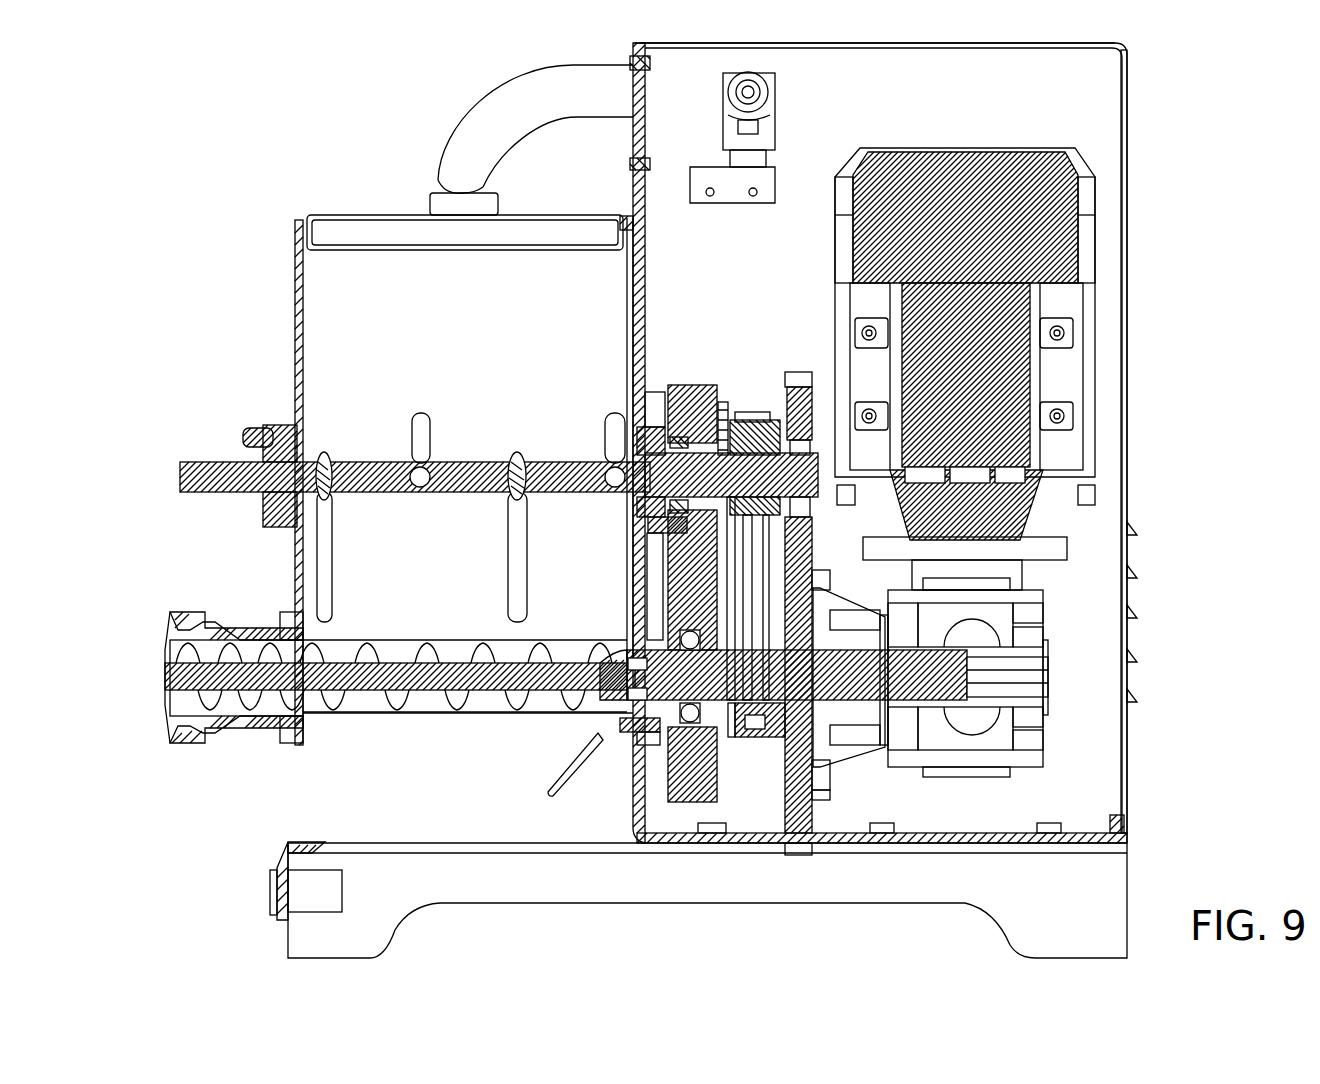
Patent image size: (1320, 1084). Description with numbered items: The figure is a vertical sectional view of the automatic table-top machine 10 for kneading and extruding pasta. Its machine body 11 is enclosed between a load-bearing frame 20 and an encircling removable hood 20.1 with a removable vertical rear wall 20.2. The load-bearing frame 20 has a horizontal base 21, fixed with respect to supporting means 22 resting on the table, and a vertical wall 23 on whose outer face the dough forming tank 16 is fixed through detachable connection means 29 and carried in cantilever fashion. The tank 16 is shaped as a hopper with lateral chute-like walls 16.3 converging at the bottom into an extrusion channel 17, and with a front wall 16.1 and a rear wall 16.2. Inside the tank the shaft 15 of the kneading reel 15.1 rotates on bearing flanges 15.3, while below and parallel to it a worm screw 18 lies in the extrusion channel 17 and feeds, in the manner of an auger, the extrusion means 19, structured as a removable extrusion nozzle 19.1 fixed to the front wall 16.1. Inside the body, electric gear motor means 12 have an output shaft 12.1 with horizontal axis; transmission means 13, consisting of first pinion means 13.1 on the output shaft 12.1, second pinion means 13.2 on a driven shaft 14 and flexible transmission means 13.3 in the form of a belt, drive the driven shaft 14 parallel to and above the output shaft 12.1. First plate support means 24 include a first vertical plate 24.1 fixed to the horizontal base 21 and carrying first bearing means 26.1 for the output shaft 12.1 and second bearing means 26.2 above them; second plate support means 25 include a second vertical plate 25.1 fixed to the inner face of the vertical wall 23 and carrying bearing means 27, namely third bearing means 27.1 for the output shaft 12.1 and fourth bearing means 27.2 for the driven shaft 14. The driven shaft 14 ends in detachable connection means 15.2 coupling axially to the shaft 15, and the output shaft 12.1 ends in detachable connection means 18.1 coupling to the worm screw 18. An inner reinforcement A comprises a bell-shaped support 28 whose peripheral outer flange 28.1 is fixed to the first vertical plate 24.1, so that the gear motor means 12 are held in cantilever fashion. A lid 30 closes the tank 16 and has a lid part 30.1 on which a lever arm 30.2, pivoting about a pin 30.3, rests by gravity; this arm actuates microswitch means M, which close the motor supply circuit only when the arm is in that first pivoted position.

The automatic table-top machine 10 is at (183, 183).
The machine body 11 is at (1196, 165).
The electric gear motor means 12 is at (1068, 650).
The output shaft 12.1 is at (880, 700).
The transmission means 13 is at (750, 400).
The first pinion means 13.1 is at (737, 700).
The second pinion means 13.2 is at (746, 428).
The flexible transmission means 13.3 is at (760, 400).
The driven shaft 14 is at (782, 470).
The shaft of the kneading reel 15 is at (488, 465).
The kneading reel 15.1 is at (590, 440).
The detachable connection means 15.2 is at (605, 452).
The shaft bearing flange 15.3 is at (282, 540).
The dough forming tank 16 is at (275, 330).
The front wall 16.1 is at (290, 265).
The rear wall 16.2 is at (622, 215).
The lateral chute-like walls 16.3 is at (465, 355).
The extrusion channel 17 is at (432, 702).
The worm screw 18 is at (495, 692).
The detachable connection means 18.1 is at (612, 660).
The extrusion means 19 is at (252, 615).
The removable extrusion nozzle 19.1 is at (252, 735).
The load-bearing frame 20 is at (612, 806).
The removable hood 20.1 is at (1020, 45).
The removable vertical rear wall 20.2 is at (1130, 248).
The horizontal base 21 is at (975, 833).
The supporting means 22 is at (288, 842).
The vertical wall 23 is at (648, 250).
The first plate support means 24 is at (790, 800).
The first vertical plate 24.1 is at (810, 565).
The second plate support means 25 is at (692, 795).
The second vertical plate 25.1 is at (700, 392).
The first bearing means 26.1 is at (762, 737).
The second bearing means 26.2 is at (800, 372).
The bearing means 27 is at (658, 540).
The third bearing means 27.1 is at (634, 742).
The fourth bearing means 27.2 is at (678, 385).
The bell-shaped support 28 is at (842, 582).
The peripheral outer flange 28.1 is at (832, 790).
The detachable connection means 29 is at (596, 730).
The lid 30 is at (382, 226).
The lid part 30.1 is at (430, 206).
The lever arm 30.2 is at (496, 105).
The pin 30.3 is at (762, 82).
The microswitch means M is at (786, 126).
The inner reinforcement A is at (800, 365).